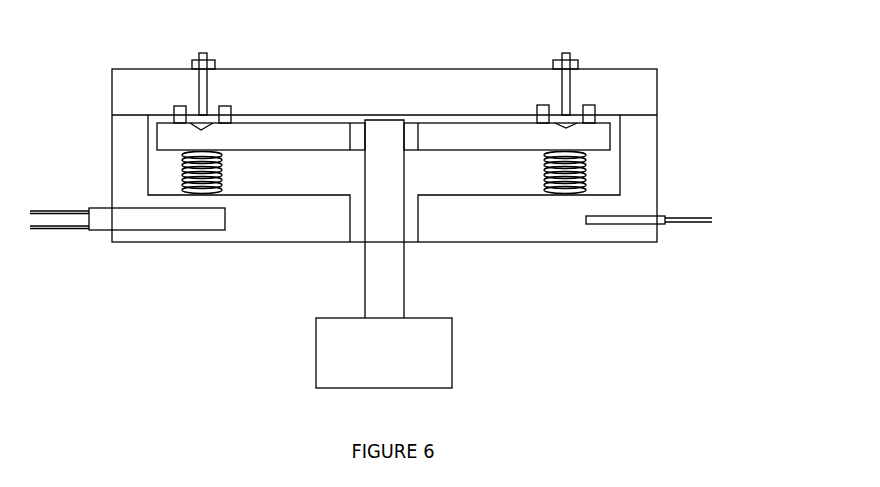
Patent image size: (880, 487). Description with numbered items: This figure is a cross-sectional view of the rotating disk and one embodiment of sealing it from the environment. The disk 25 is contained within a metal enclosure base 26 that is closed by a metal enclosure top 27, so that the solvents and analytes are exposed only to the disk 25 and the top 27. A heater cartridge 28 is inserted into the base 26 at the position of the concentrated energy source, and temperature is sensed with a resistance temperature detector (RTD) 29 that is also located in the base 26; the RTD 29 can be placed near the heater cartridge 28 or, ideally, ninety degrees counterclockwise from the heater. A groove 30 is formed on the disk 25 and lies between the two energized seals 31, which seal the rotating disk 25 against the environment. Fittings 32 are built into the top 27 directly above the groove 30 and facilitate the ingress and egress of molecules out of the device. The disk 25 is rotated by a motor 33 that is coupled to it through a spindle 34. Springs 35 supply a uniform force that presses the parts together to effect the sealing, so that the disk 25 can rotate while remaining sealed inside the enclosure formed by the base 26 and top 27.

The disk 25 is at (261, 136).
The metal enclosure base 26 is at (249, 178).
The metal enclosure top 27 is at (384, 155).
The heater cartridge 28 is at (127, 219).
The resistance temperature detector (RTD) 29 is at (633, 221).
The groove 30 is at (560, 124).
The energized seals 31 is at (229, 102).
The fittings 32 is at (550, 56).
The motor 33 is at (384, 353).
The spindle 34 is at (395, 268).
The springs 35 is at (597, 172).